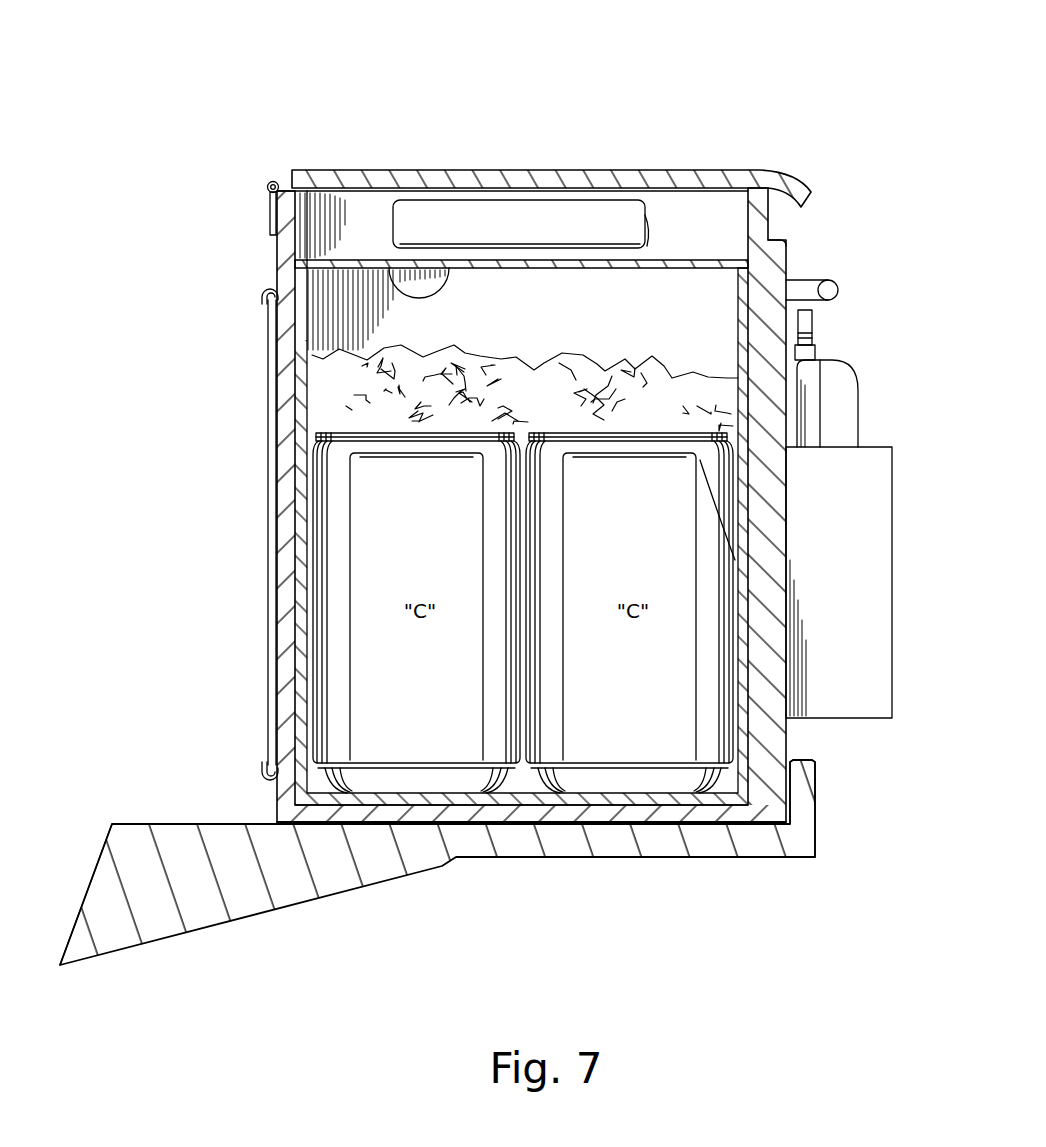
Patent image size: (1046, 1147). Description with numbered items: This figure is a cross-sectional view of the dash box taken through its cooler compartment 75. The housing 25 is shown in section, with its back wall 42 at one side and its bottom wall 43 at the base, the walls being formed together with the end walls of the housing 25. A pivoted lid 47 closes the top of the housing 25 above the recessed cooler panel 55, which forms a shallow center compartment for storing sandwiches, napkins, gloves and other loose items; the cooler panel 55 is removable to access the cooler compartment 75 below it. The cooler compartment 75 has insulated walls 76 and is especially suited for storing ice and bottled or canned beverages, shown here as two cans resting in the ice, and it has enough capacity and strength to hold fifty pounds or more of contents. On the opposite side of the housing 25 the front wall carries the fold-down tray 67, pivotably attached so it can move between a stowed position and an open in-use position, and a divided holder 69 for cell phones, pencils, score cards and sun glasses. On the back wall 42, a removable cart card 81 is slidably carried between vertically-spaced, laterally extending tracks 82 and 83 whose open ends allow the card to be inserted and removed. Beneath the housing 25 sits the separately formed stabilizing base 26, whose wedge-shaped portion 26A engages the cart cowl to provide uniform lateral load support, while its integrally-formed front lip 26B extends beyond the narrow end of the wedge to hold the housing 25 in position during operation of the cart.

The housing 25 is at (249, 155).
The stabilizing base 26 is at (454, 885).
The wedge-shaped portion 26A is at (160, 930).
The front lip 26B is at (815, 820).
The back wall 42 is at (275, 240).
The bottom wall 43 is at (595, 858).
The pivoted lid 47 is at (520, 172).
The recessed cooler panel 55 is at (387, 262).
The fold-down tray 67 is at (775, 290).
The divided holder 69 is at (875, 512).
The cooler compartment 75 is at (675, 325).
The insulated walls 76 is at (735, 290).
The cart card 81 is at (283, 505).
The track 82 is at (263, 295).
The track 83 is at (262, 775).